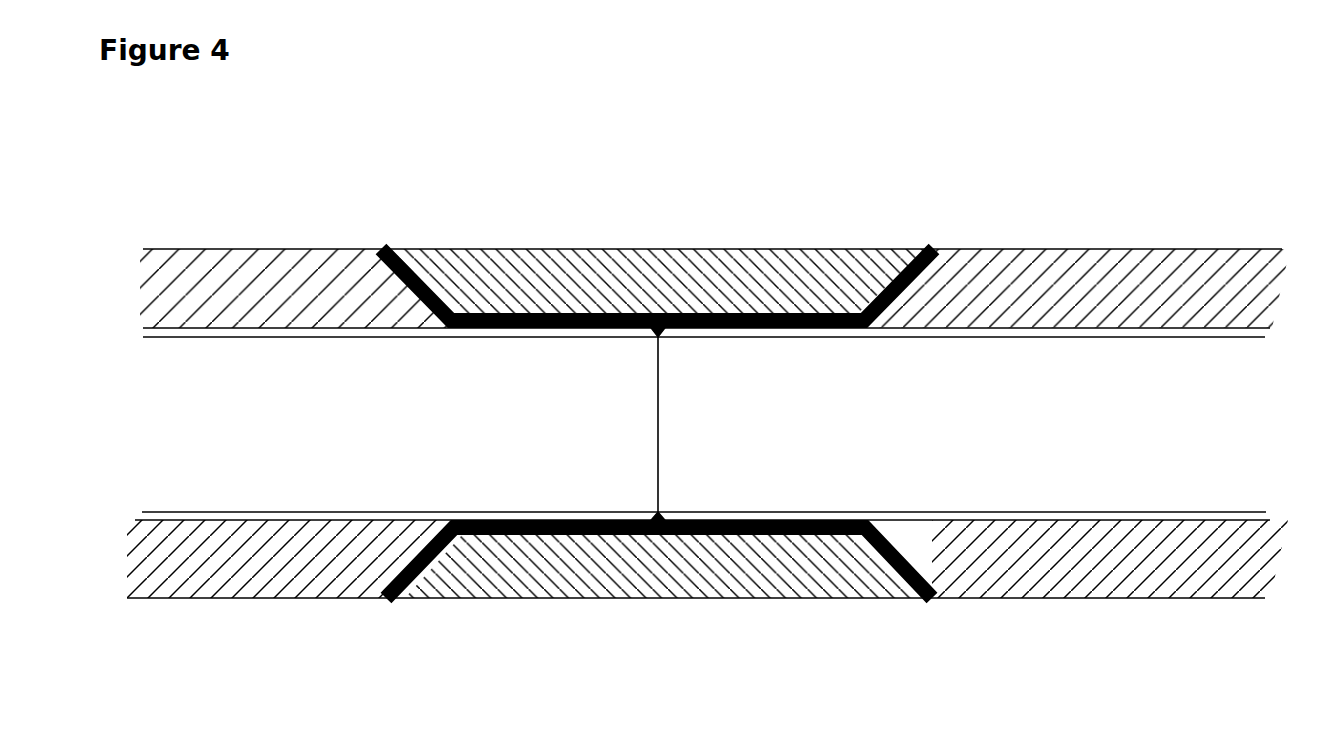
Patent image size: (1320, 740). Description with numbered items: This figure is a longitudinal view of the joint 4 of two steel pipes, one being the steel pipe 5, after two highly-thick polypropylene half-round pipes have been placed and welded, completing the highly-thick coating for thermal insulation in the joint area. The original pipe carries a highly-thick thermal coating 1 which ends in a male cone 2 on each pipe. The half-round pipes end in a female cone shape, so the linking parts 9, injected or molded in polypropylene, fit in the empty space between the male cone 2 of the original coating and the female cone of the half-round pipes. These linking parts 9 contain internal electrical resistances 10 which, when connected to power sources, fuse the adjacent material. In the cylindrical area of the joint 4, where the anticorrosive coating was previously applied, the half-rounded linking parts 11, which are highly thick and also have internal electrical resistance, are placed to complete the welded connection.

The highly-thick thermal coating 1 is at (715, 288).
The male cone 2 is at (927, 252).
The joint 4 is at (658, 453).
The steel pipe 5 is at (1108, 333).
The linking parts 9 is at (400, 251).
The internal electrical resistances 10 is at (885, 285).
The linking parts 11 is at (660, 328).